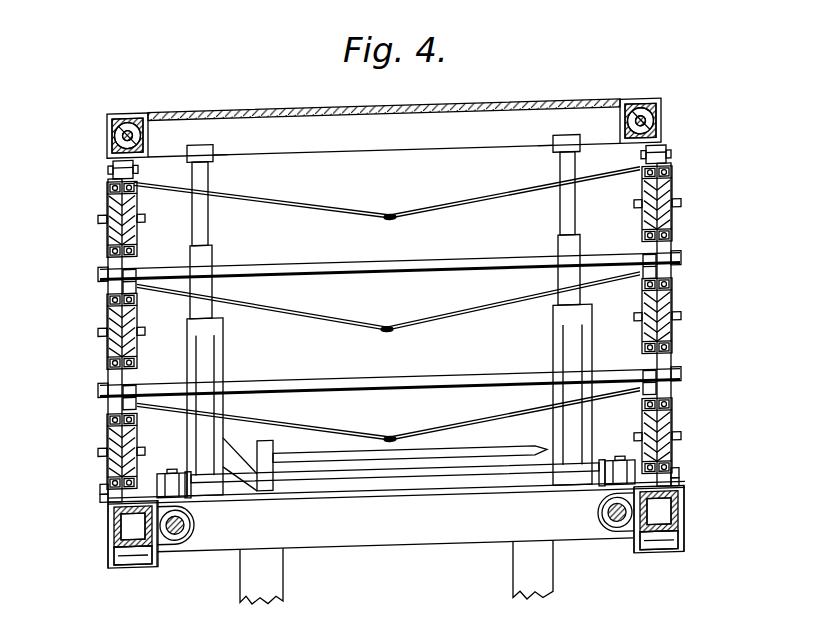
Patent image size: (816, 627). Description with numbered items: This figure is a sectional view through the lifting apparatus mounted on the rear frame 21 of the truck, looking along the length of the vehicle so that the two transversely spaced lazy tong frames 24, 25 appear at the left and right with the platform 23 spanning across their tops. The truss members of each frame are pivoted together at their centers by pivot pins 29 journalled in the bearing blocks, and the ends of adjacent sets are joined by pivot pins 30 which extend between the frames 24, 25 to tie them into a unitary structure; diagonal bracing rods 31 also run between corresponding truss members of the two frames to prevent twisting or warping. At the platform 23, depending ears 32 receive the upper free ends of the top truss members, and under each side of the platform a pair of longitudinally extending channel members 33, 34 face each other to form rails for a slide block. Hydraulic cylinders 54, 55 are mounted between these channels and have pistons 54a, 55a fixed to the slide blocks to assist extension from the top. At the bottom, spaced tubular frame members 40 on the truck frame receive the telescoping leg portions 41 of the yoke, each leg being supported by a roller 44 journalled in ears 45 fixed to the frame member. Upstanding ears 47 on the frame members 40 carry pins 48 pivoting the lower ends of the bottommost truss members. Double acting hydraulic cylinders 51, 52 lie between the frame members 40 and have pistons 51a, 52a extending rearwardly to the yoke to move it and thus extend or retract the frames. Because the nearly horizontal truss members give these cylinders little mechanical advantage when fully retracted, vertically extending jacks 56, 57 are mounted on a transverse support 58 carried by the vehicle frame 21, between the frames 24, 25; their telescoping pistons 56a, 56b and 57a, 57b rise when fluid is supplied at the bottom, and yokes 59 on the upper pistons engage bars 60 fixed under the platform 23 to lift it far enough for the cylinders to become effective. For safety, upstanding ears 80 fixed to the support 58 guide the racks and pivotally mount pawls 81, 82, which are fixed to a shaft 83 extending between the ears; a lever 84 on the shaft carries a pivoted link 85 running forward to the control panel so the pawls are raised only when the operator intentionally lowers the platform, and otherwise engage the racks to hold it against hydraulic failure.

The rear frame 21 is at (283, 578).
The platform 23 is at (268, 108).
The lazy tong frame 24 is at (98, 314).
The lazy tong frame 25 is at (682, 304).
The pivot pins 29 is at (98, 211).
The pivot pins 30 is at (376, 262).
The diagonal bracing rods 31 is at (408, 212).
The depending ears 32 is at (108, 160).
The channel member 33 is at (107, 128).
The channel member 34 is at (146, 128).
The tubular frame members 40 is at (108, 520).
The leg portions 41 is at (121, 528).
The roller 44 is at (133, 560).
The ears 45 is at (110, 560).
The upstanding ears 47 is at (100, 491).
The pins 48 is at (100, 481).
The hydraulic cylinder 51 is at (191, 519).
The piston 51a is at (193, 531).
The hydraulic cylinder 52 is at (601, 518).
The piston 52a is at (599, 530).
The hydraulic cylinder 54 is at (128, 116).
The piston 54a is at (120, 121).
The hydraulic cylinder 55 is at (641, 116).
The piston 55a is at (652, 119).
The jack 56 is at (223, 343).
The telescoping piston 56a is at (213, 290).
The telescoping piston 56b is at (209, 229).
The jack 57 is at (553, 341).
The telescoping piston 57a is at (557, 285).
The telescoping piston 57b is at (559, 226).
The transverse support 58 is at (400, 497).
The yokes 59 is at (213, 148).
The bars 60 is at (216, 156).
The upstanding ears 80 is at (170, 467).
The pawl 81 is at (189, 470).
The pawl 82 is at (601, 468).
The shaft 83 is at (350, 478).
The lever 84 is at (282, 452).
The link 85 is at (262, 445).